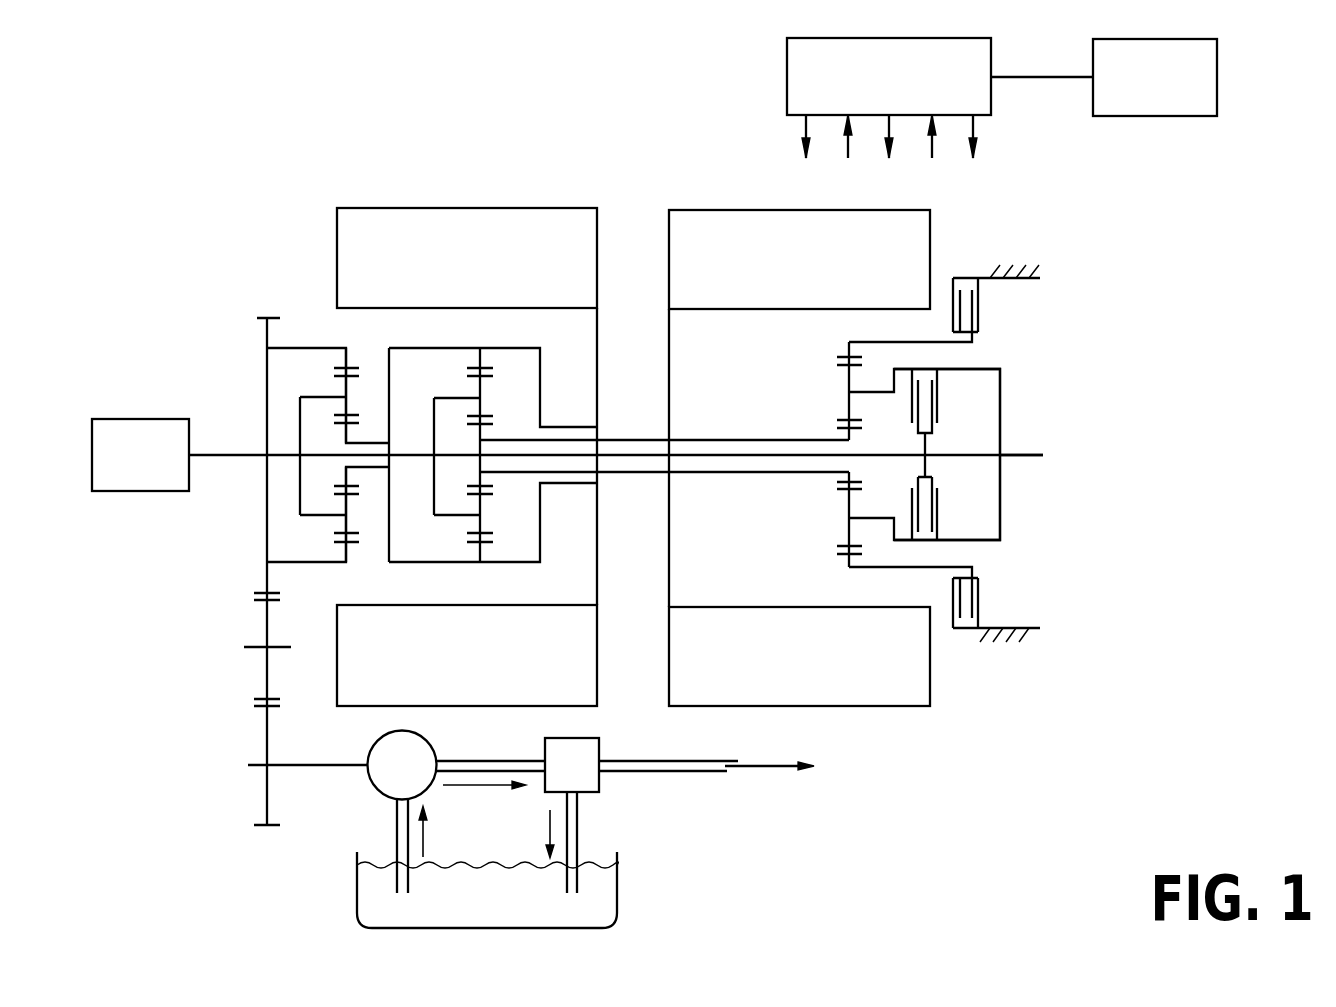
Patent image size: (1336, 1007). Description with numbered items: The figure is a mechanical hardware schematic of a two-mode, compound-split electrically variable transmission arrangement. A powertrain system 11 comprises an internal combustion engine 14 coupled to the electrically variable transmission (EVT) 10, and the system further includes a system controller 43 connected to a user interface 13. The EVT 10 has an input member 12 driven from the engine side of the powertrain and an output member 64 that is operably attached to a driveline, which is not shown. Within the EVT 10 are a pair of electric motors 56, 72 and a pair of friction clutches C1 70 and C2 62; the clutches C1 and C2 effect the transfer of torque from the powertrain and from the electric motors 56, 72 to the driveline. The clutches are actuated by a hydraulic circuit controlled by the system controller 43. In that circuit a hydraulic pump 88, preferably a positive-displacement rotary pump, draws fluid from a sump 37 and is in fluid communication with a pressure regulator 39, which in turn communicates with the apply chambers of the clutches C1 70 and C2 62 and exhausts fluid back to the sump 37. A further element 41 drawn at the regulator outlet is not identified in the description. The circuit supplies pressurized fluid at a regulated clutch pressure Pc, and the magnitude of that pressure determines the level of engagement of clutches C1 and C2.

The electrically variable transmission 10 is at (635, 178).
The powertrain system 11 is at (200, 310).
The input member 12 is at (232, 453).
The user interface 13 is at (1140, 92).
The internal combustion engine 14 is at (127, 470).
The sump 37 is at (617, 892).
The pressure regulator 39 is at (599, 788).
The lubrication line 41 is at (733, 772).
The system controller 43 is at (874, 92).
The electric motor 56 is at (452, 273).
The friction clutch C2 62 is at (937, 393).
The output member 64 is at (1020, 453).
The friction clutch C1 70 is at (979, 300).
The electric motor 72 is at (784, 273).
The hydraulic pump 88 is at (413, 757).
The friction clutch C1 is at (991, 605).
The friction clutch C2 is at (951, 518).